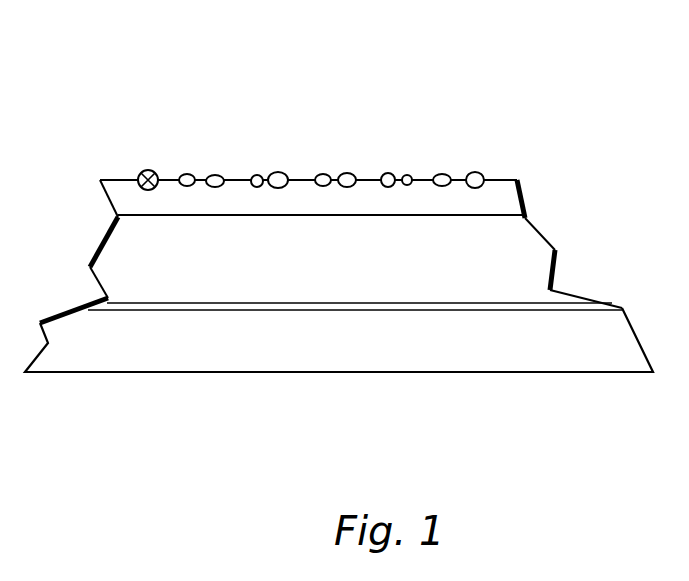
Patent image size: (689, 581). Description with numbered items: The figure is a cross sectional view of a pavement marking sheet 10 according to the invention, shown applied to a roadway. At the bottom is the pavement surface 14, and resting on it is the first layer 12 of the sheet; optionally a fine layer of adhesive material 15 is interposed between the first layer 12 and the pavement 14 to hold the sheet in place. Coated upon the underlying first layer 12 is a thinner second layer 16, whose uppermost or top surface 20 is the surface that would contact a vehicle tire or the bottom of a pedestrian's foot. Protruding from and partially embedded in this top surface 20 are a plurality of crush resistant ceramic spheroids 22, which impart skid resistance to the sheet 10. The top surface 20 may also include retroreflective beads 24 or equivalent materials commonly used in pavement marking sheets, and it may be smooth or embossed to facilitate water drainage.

The pavement marking sheet 10 is at (357, 80).
The first layer 12 is at (531, 245).
The pavement surface 14 is at (581, 350).
The layer of adhesive material 15 is at (594, 297).
The second layer 16 is at (500, 192).
The uppermost or top surface 20 is at (500, 173).
The ceramic spheroids 22 is at (271, 169).
The retroreflective beads 24 is at (146, 168).